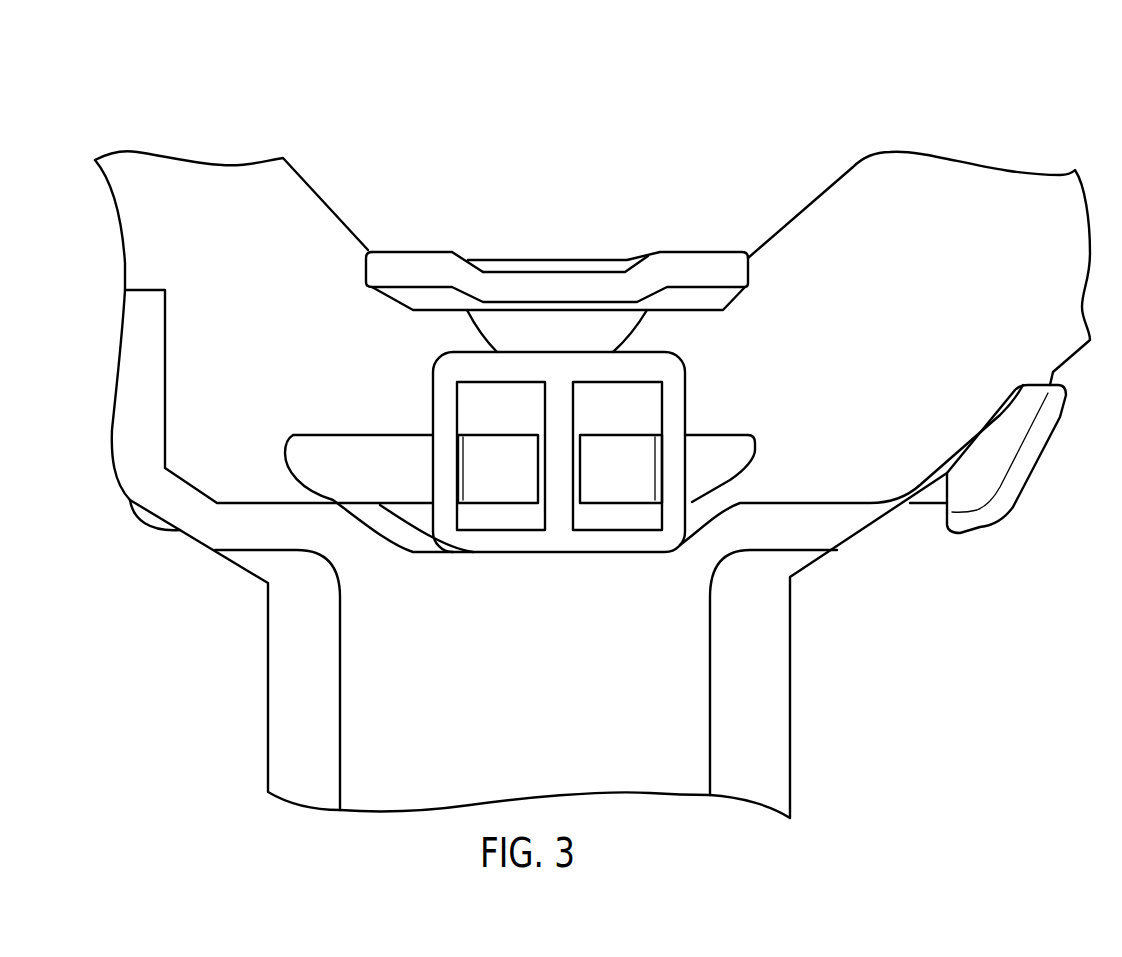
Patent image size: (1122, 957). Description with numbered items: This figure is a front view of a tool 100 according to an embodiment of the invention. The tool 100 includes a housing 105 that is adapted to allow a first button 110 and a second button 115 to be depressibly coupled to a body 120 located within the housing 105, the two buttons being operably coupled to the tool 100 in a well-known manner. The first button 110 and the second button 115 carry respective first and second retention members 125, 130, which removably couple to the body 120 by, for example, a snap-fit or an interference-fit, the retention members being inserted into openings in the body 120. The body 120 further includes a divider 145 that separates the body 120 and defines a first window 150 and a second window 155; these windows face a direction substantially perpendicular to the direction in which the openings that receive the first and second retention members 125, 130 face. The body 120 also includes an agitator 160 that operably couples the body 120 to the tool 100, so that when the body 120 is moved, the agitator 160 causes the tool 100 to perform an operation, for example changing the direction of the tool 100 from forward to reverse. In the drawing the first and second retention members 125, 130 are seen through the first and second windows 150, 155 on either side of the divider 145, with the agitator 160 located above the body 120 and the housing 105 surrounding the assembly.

The tool 100 is at (1050, 115).
The housing 105 is at (867, 520).
The first button 110 is at (153, 520).
The second button 115 is at (1058, 400).
The body 120 is at (502, 278).
The first retention member 125 is at (513, 447).
The second retention member 130 is at (633, 447).
The divider 145 is at (555, 493).
The first window 150 is at (497, 517).
The second window 155 is at (625, 492).
The agitator 160 is at (470, 256).